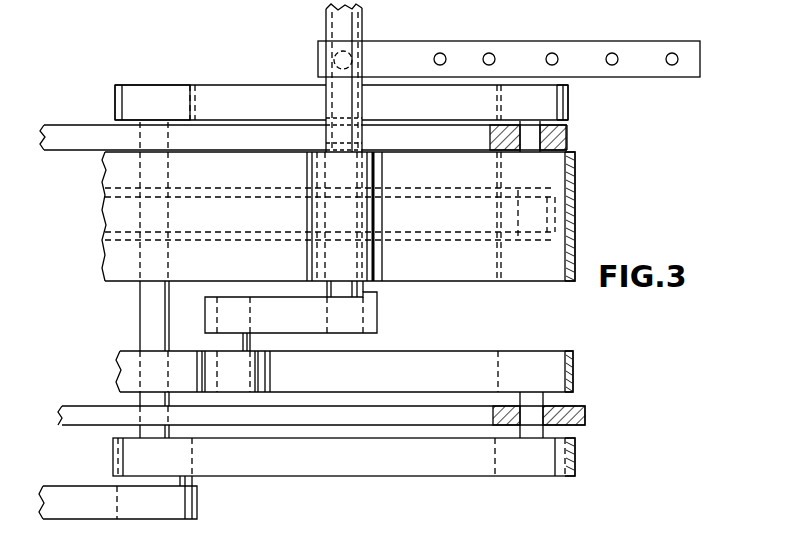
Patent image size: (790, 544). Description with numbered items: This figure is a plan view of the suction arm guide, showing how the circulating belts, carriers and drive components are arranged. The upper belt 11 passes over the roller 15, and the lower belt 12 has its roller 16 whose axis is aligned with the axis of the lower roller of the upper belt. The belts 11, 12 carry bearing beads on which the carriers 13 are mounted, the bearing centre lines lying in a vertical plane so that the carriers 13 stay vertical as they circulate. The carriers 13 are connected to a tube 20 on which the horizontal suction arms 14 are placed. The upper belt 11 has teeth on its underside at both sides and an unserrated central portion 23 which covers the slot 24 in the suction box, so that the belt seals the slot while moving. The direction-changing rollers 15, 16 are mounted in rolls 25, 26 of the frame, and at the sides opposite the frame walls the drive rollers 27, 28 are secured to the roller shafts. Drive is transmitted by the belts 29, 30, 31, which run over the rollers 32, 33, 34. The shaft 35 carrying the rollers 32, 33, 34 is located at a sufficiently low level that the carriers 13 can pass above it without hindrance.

The upper belt 11 is at (108, 172).
The lower belt 12 is at (420, 380).
The carriers 13 is at (317, 323).
The suction arms 14 is at (585, 45).
The roller 15 is at (553, 258).
The roller 16 is at (555, 366).
The tube 20 is at (338, 100).
The unserrated central portion 23 is at (112, 212).
The slot 24 is at (462, 217).
The roll 25 is at (585, 414).
The roll 26 is at (72, 138).
The drive roller 27 is at (560, 104).
The drive roller 28 is at (576, 460).
The belt 29 is at (455, 465).
The belt 30 is at (66, 497).
The belt 31 is at (250, 97).
The roller 32 is at (197, 505).
The roller 33 is at (185, 468).
The roller 34 is at (137, 95).
The shaft 35 is at (150, 303).